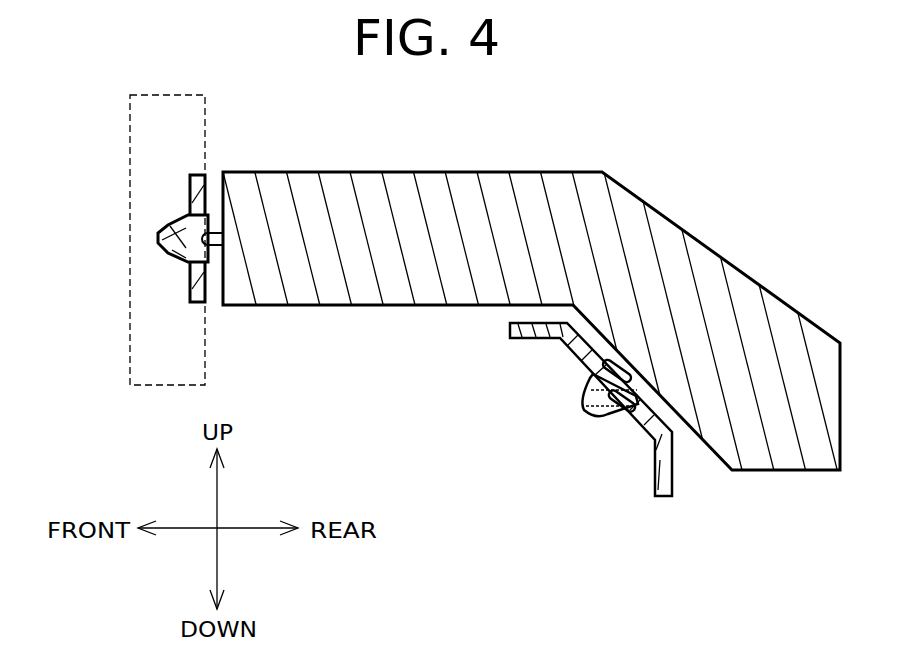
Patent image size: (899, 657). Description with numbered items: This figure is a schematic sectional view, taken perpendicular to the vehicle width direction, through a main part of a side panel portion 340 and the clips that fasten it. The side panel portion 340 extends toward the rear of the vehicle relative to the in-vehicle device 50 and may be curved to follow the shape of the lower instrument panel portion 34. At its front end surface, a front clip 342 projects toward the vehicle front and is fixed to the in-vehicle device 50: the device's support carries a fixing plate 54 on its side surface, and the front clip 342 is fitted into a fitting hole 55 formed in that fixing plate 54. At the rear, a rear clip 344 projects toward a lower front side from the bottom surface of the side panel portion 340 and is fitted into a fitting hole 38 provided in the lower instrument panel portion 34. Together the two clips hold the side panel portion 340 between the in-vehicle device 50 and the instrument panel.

The in-vehicle device 50 is at (133, 107).
The fixing plate 54 is at (200, 192).
The fitting hole 55 is at (158, 240).
The front clip 342 is at (186, 250).
The side panel portion 340 is at (370, 217).
The lower instrument panel portion 34 is at (535, 340).
The rear clip 344 is at (585, 402).
The fitting hole 38 is at (603, 412).